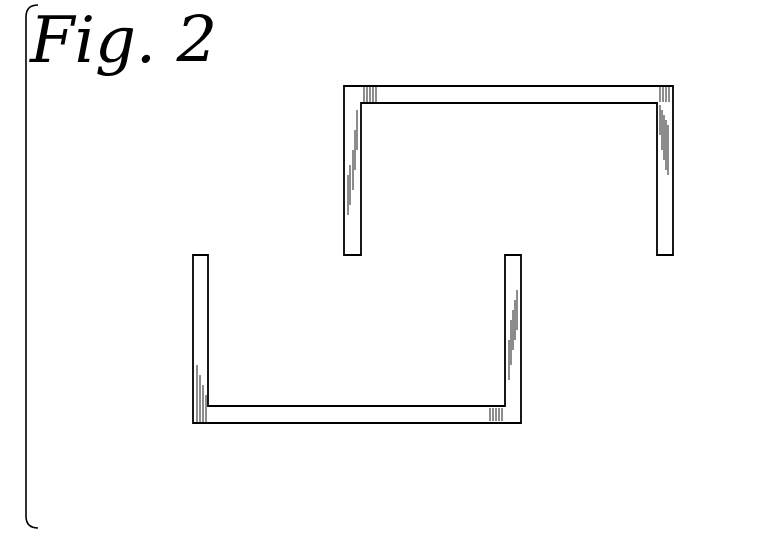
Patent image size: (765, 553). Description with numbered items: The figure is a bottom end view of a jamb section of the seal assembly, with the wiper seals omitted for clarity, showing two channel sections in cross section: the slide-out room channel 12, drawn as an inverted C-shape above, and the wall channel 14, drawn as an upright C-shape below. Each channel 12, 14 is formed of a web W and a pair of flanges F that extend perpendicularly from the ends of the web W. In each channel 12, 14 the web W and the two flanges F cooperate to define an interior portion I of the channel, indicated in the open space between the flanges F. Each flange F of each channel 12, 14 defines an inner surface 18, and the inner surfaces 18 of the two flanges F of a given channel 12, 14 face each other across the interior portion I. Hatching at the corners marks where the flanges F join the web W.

The slide-out room channel 12 is at (606, 60).
The wall channel 14 is at (288, 445).
The inner surfaces 18 is at (375, 144).
The web W is at (520, 103).
The flanges F is at (344, 172).
The interior portions I is at (293, 368).